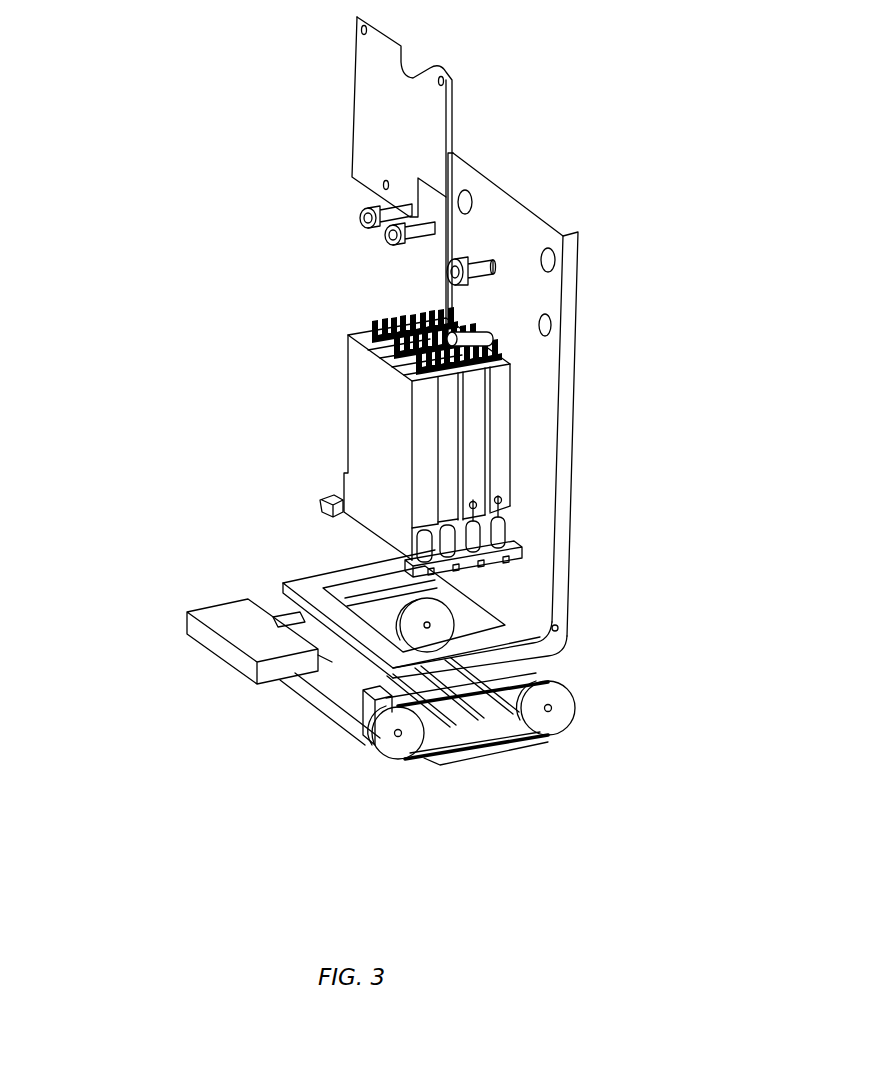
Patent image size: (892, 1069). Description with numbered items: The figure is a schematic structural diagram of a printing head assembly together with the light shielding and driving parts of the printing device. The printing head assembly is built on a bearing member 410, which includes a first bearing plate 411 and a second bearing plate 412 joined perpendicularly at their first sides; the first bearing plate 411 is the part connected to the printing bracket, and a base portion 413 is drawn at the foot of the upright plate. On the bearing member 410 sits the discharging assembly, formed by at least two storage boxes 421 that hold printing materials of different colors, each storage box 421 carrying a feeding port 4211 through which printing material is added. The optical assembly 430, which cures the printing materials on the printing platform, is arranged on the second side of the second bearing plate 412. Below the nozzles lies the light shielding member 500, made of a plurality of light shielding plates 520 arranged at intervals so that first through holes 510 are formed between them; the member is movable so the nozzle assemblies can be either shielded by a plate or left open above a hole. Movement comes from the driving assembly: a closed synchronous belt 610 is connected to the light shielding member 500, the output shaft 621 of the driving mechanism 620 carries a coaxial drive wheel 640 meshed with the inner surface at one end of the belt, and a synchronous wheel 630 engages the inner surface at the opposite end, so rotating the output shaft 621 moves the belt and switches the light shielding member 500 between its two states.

The bearing member 410 is at (122, 325).
The first bearing plate 411 is at (446, 240).
The second bearing plate 412 is at (307, 582).
The base foot plate 413 is at (523, 645).
The storage box 421 is at (497, 390).
The feeding port 4211 is at (500, 538).
The optical assembly 430 is at (233, 657).
The light shielding member 500 is at (533, 740).
The first through hole 510 is at (470, 758).
The light shielding plate 520 is at (442, 758).
The closed synchronous belt 610 is at (437, 748).
The driving mechanism 620 is at (363, 703).
The output shaft 621 is at (390, 742).
The synchronous wheel 630 is at (572, 722).
The drive wheel 640 is at (395, 740).